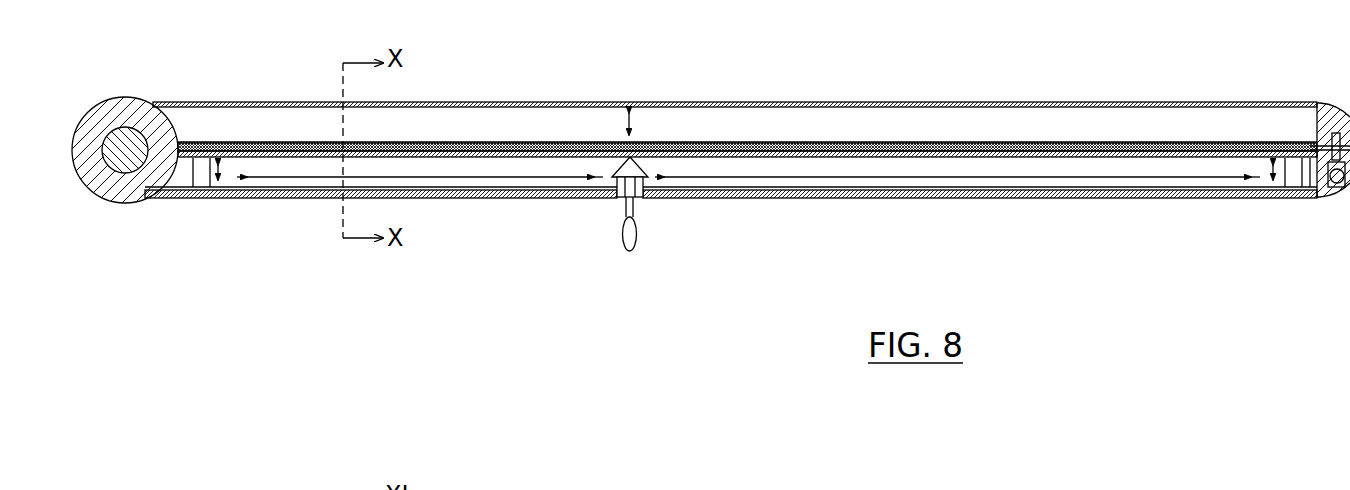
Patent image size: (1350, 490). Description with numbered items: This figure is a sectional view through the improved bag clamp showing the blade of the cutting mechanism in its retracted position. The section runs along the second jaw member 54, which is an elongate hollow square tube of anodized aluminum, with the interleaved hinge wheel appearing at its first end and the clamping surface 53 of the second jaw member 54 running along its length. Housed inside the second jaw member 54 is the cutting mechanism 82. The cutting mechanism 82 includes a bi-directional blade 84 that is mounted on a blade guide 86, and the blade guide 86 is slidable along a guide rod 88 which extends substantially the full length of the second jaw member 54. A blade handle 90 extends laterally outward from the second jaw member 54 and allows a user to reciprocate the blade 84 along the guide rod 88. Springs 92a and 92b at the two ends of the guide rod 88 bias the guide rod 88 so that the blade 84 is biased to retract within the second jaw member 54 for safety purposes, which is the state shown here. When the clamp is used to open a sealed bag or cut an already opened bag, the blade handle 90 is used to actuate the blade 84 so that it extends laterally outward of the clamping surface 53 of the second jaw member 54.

The clamping surface 53 is at (927, 143).
The second jaw member 54 is at (1150, 198).
The cutting mechanism 82 is at (610, 209).
The blade 84 is at (628, 157).
The blade guide 86 is at (646, 198).
The guide rod 88 is at (771, 193).
The blade handle 90 is at (629, 252).
The spring 92a is at (193, 176).
The spring 92b is at (1297, 172).